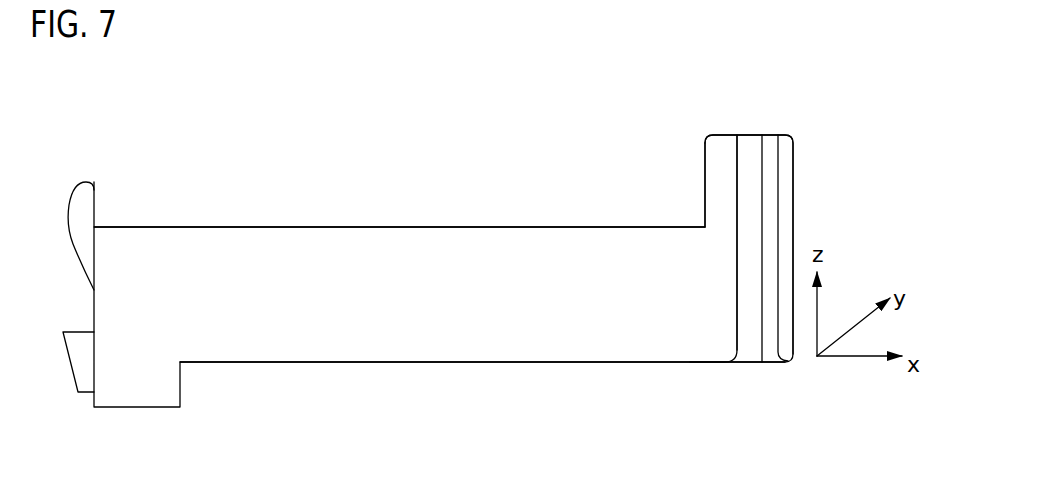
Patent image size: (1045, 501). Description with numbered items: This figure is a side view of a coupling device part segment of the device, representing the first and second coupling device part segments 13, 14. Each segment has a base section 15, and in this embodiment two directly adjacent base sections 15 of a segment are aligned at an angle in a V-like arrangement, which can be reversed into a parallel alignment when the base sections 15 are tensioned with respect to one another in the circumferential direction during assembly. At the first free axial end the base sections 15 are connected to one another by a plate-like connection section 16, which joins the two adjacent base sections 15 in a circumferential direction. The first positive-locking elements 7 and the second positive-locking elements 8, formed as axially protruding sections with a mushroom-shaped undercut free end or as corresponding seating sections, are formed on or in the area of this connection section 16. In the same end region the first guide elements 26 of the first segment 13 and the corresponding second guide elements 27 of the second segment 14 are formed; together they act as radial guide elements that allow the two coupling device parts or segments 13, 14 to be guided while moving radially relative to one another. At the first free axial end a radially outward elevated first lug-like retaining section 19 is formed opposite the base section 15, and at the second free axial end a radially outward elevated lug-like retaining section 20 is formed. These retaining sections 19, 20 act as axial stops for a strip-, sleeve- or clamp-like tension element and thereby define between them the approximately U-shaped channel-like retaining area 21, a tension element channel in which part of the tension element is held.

The first positive-locking element 7 is at (740, 200).
The second positive-locking element 8 is at (742, 127).
The first coupling device part segment 13 is at (482, 427).
The second coupling device part segment 14 is at (453, 368).
The base section 15 is at (428, 265).
The connection section 16 is at (711, 342).
The first lug-like retaining section 19 is at (705, 173).
The lug-like retaining section 20 is at (80, 220).
The channel-like retaining area 21 is at (270, 202).
The first guide element 26 is at (770, 191).
The second guide element 27 is at (763, 125).